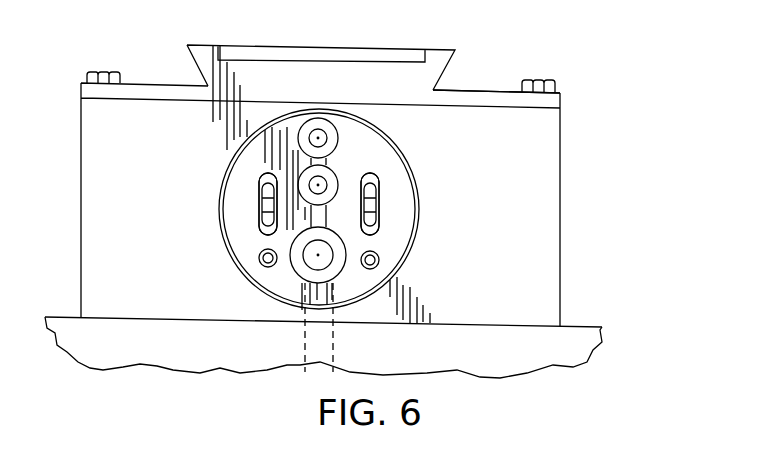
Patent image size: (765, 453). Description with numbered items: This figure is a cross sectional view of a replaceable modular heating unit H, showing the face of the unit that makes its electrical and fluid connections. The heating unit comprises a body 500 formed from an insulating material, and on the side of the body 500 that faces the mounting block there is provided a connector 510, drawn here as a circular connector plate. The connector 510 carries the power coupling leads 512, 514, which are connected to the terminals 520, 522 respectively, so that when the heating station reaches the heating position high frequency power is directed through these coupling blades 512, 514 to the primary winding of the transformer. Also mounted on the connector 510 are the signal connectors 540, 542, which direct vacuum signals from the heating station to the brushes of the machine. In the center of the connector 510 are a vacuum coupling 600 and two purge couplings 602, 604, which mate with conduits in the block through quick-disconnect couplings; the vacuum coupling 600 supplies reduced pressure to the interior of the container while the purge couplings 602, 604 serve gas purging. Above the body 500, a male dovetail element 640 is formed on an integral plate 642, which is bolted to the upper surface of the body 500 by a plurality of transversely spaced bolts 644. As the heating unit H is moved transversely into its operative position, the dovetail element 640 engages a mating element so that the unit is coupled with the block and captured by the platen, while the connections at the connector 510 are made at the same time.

The heating unit H is at (562, 175).
The body 500 is at (548, 262).
The connector 510 is at (418, 197).
The power coupling lead 512 is at (373, 188).
The power coupling lead 514 is at (268, 220).
The terminal 520 is at (375, 213).
The terminal 522 is at (263, 190).
The signal connector 540 is at (372, 262).
The signal connector 542 is at (267, 262).
The vacuum coupling 600 is at (330, 262).
The purge coupling 602 is at (327, 180).
The purge coupling 604 is at (328, 132).
The male dovetail element 640 is at (448, 67).
The integral plate 642 is at (473, 95).
The bolts 644 is at (110, 72).